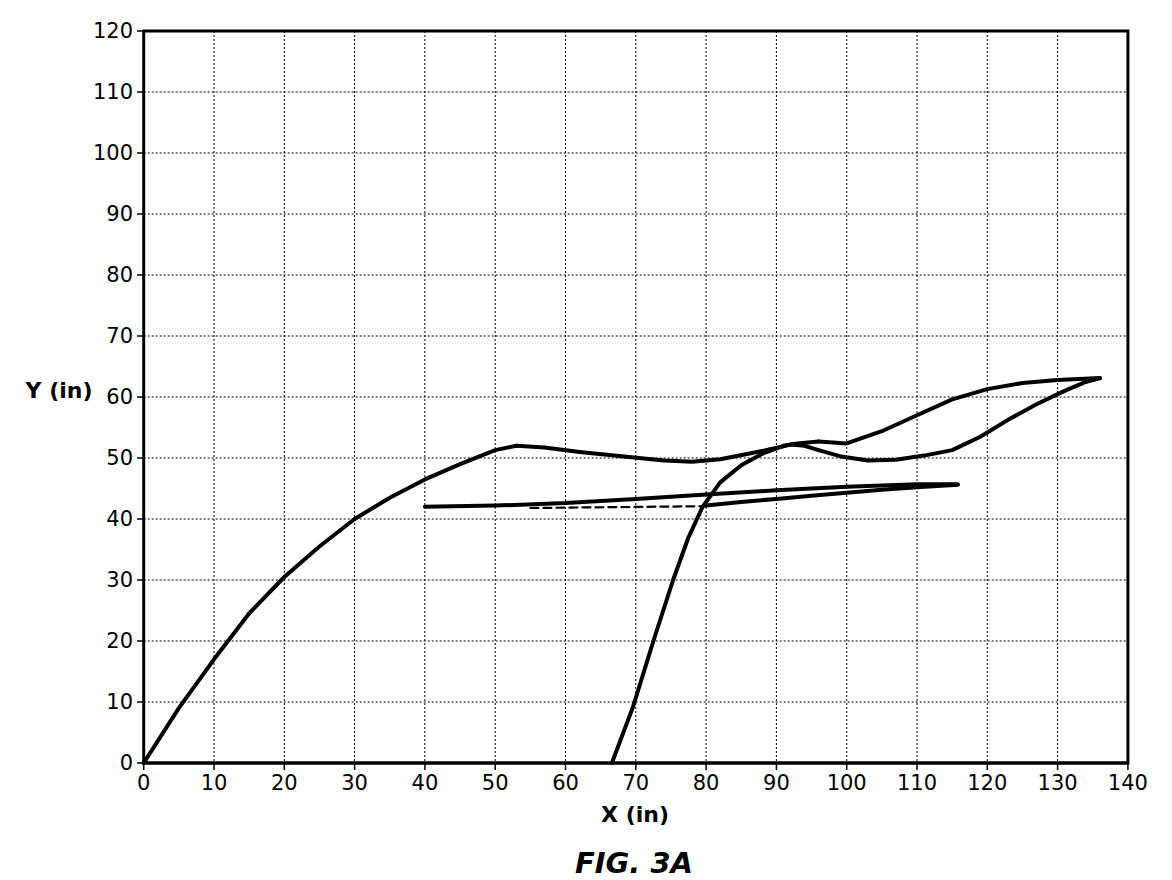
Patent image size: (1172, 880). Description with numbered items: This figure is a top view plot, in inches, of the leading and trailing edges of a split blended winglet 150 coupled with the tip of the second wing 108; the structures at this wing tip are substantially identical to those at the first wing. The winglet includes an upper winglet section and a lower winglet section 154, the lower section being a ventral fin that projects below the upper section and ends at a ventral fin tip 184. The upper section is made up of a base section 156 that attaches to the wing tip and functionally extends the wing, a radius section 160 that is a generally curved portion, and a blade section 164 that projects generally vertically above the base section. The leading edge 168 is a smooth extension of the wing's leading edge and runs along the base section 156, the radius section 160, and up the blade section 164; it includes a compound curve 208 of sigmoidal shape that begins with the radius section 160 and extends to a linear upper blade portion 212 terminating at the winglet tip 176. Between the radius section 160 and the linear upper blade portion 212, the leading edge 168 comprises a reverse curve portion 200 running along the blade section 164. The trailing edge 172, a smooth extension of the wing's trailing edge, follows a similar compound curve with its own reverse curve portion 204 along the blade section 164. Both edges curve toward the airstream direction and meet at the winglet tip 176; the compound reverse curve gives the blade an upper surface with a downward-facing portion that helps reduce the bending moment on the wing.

The second wing 108 is at (468, 722).
The split blended winglet 150 is at (603, 353).
The lower winglet section 154 is at (829, 511).
The base section 156 is at (262, 628).
The radius section 160 is at (470, 473).
The blade section 164 is at (900, 422).
The leading edge 168 is at (328, 541).
The trailing edge 172 is at (673, 592).
The winglet tip 176 is at (1100, 378).
The ventral fin tip 184 is at (958, 487).
The reverse curve portion 200 is at (677, 457).
The reverse curve portion 204 is at (965, 430).
The compound curve 208 is at (823, 433).
The linear upper blade portion 212 is at (1023, 390).